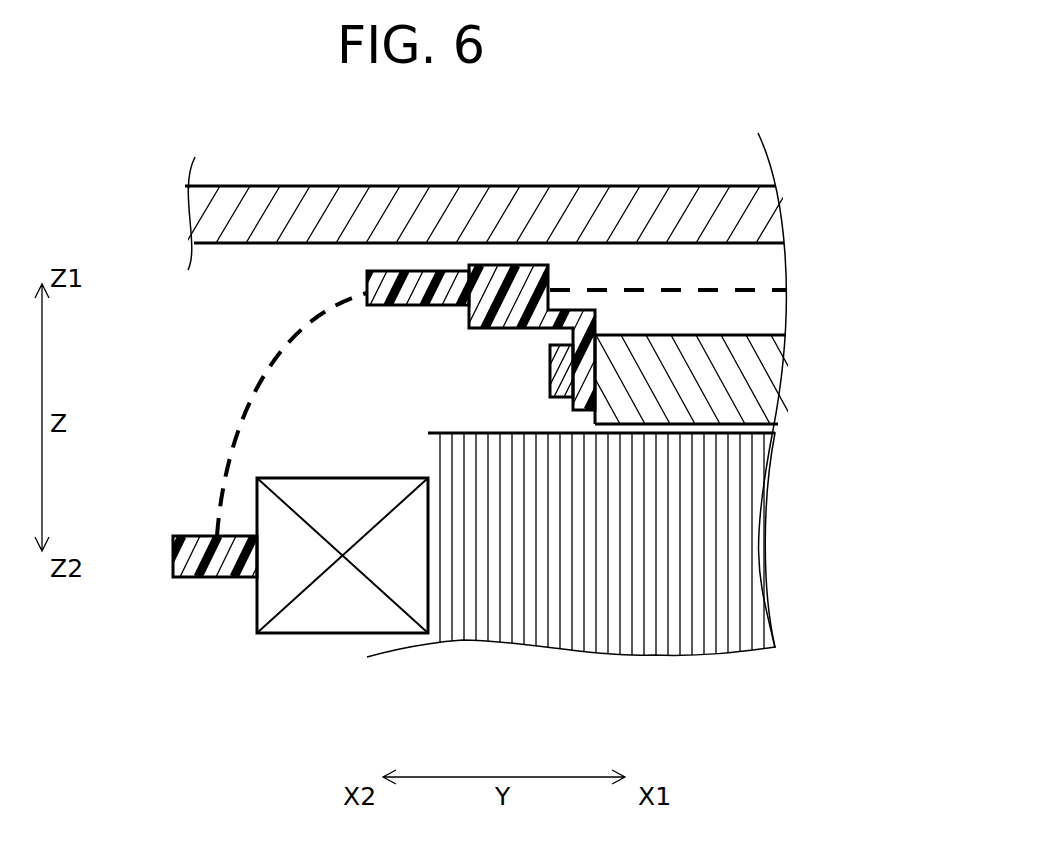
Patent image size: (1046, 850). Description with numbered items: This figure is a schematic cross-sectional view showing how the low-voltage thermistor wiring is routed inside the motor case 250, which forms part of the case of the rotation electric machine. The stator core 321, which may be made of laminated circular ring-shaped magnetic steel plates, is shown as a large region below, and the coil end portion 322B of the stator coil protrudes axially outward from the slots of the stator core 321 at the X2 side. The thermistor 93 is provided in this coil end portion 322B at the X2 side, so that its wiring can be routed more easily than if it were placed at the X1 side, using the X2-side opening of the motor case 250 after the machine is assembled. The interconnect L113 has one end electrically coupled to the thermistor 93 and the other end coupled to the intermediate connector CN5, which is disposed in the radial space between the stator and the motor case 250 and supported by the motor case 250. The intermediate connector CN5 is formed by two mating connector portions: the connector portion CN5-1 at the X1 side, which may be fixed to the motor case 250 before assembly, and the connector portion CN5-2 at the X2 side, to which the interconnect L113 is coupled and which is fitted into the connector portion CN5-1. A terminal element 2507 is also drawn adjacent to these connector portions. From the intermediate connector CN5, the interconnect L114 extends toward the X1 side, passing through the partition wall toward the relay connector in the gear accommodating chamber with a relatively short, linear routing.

The motor case 250 is at (571, 210).
The intermediate connector CN5 is at (480, 265).
The connector portion CN5-1 is at (527, 272).
The connector portion CN5-2 is at (423, 300).
The interconnect L114 is at (670, 288).
The interconnect L113 is at (278, 370).
The connector terminal 2507 is at (512, 383).
The thermistor 93 is at (215, 567).
The coil end portion 322B is at (328, 605).
The stator core 321 is at (590, 608).